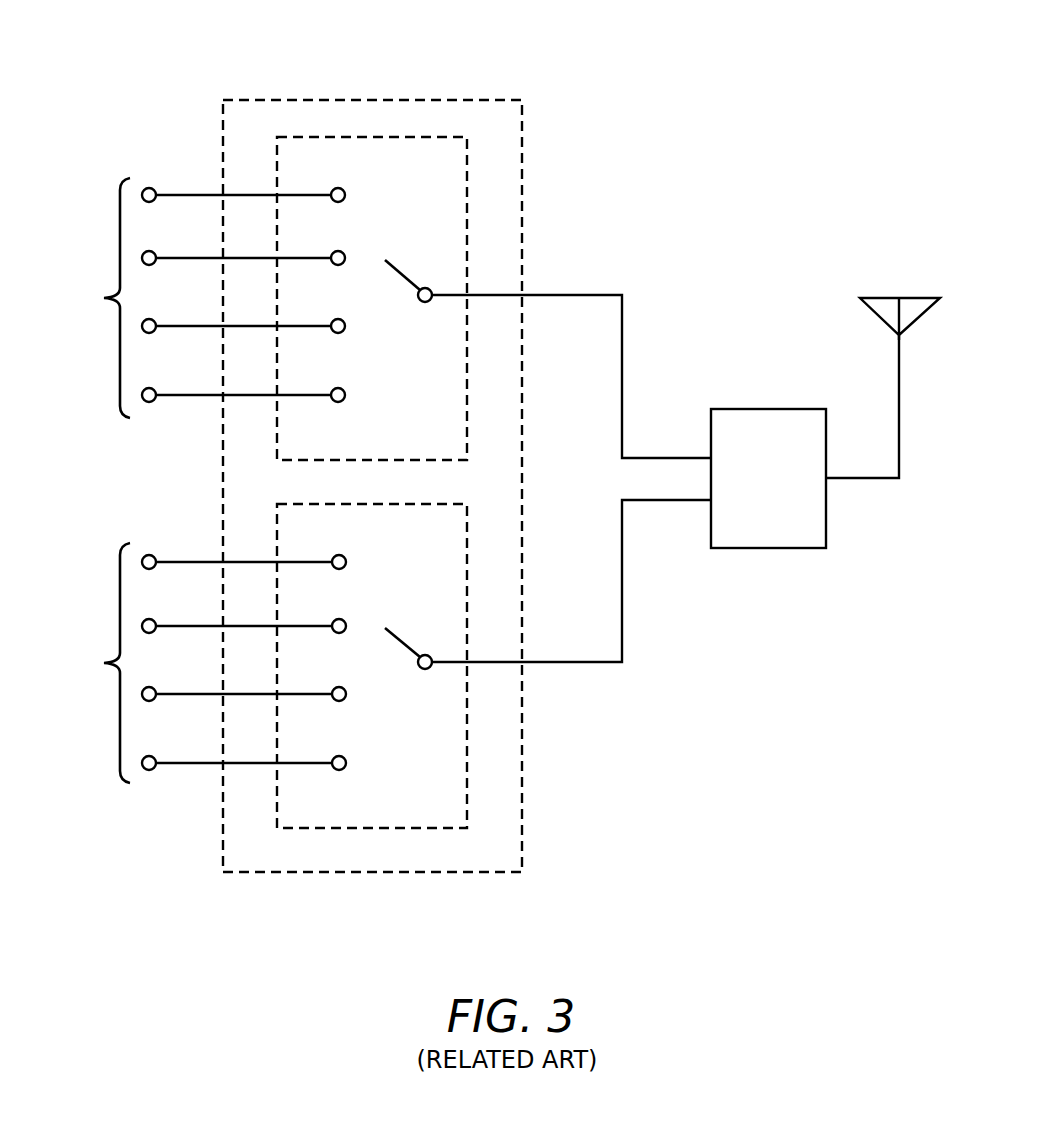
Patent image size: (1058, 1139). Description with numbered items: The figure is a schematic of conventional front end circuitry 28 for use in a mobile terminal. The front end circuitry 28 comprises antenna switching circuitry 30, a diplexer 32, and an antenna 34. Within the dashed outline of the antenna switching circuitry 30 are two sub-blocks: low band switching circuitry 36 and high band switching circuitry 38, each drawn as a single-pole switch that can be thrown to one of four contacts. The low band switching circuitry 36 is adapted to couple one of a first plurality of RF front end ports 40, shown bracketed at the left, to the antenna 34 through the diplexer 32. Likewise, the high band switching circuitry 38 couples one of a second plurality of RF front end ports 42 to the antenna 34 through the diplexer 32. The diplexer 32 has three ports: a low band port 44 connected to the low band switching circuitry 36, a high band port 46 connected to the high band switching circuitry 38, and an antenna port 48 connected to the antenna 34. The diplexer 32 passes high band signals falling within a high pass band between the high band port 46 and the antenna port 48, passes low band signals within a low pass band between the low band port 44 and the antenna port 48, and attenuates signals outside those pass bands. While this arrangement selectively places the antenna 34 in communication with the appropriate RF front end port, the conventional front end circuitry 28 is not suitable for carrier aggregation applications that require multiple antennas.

The front end circuitry 28 is at (561, 56).
The antenna switching circuitry 30 is at (372, 486).
The diplexer 32 is at (768, 478).
The antenna 34 is at (897, 297).
The low band switching circuitry 36 is at (372, 298).
The high band switching circuitry 38 is at (372, 666).
The first plurality of RF front end ports 40 is at (204, 298).
The second plurality of RF front end ports 42 is at (205, 663).
The low band port 44 is at (706, 448).
The high band port 46 is at (706, 508).
The antenna port 48 is at (831, 487).